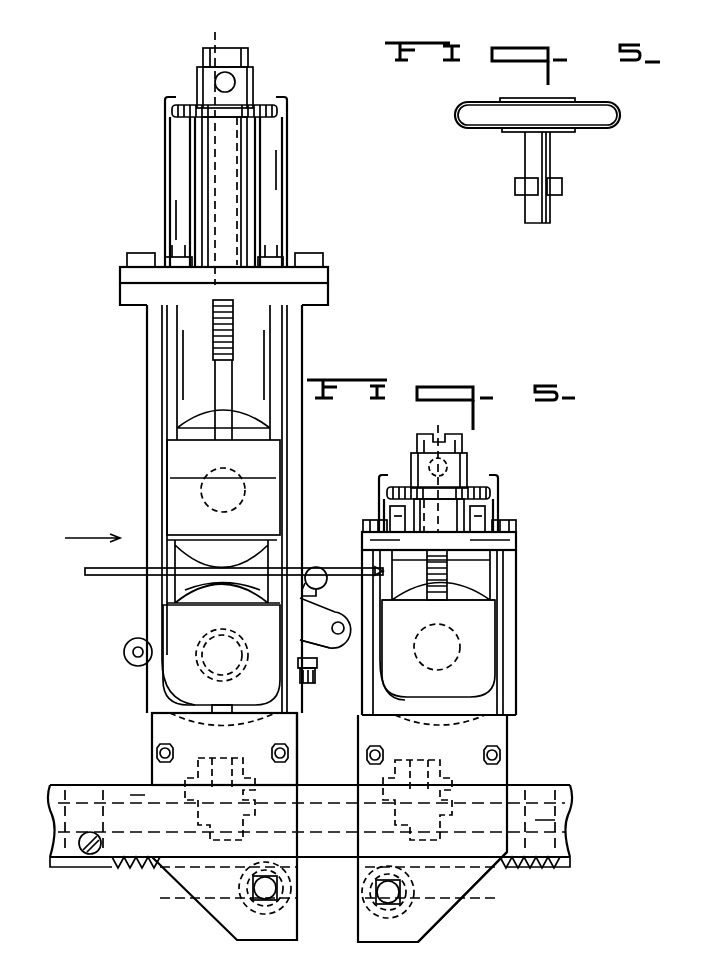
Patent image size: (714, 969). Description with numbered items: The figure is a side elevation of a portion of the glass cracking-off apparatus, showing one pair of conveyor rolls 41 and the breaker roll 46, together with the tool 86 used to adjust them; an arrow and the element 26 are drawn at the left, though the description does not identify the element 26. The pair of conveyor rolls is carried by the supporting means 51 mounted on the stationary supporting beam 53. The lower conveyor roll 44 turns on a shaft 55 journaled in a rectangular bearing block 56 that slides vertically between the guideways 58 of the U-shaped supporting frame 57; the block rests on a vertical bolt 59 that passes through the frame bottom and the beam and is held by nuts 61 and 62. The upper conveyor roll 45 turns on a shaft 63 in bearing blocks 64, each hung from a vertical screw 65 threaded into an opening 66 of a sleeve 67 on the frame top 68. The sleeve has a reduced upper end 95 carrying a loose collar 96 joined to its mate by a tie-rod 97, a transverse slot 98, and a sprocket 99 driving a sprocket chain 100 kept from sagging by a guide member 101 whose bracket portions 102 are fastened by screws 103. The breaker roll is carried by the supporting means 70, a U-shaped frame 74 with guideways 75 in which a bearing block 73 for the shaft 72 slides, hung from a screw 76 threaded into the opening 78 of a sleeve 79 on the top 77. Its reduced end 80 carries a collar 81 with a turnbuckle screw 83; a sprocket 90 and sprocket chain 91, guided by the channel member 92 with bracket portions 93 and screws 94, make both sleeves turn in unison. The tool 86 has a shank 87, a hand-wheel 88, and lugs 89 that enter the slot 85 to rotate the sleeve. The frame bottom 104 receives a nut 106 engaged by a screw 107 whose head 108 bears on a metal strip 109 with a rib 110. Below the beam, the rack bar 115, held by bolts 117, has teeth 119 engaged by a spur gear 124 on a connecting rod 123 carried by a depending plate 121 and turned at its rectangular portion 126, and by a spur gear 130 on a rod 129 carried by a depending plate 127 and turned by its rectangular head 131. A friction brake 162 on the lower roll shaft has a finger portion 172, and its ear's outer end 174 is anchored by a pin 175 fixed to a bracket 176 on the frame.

In FIG. 5, the rod 26 is at (100, 568).
In FIG. 5, the pair of conveyor rolls 41 is at (300, 527).
In FIG. 5, the lower conveyor roll 44 is at (222, 595).
In FIG. 5, the upper conveyor roll 45 is at (245, 420).
In FIG. 5, the breaker roll 46 is at (475, 595).
In FIG. 5, the supporting means 51 is at (304, 335).
In FIG. 5, the supporting beam 53 is at (68, 785).
In FIG. 5, the shaft 55 is at (195, 660).
In FIG. 5, the bearing block 56 is at (162, 688).
In FIG. 5, the supporting frame 57 is at (150, 453).
In FIG. 5, the vertical guideways 58 is at (178, 357).
In FIG. 5, the vertical bolt 59 is at (248, 722).
In FIG. 5, the nut 61 is at (222, 750).
In FIG. 5, the nut 62 is at (205, 830).
In FIG. 5, the shaft 63 is at (240, 478).
In FIG. 5, the bearing block 64 is at (175, 498).
In FIG. 5, the vertical screw 65 is at (234, 318).
In FIG. 5, the opening 66 is at (237, 210).
In FIG. 5, the vertical sleeve 67 is at (205, 158).
In FIG. 5, the top 68 is at (285, 275).
In FIG. 5, the supporting means 70 is at (530, 619).
In FIG. 5, the shaft 72 is at (425, 630).
In FIG. 5, the bearing block 73 is at (480, 680).
In FIG. 5, the supporting frame 74 is at (512, 565).
In FIG. 5, the vertical guideways 75 is at (362, 568).
In FIG. 5, the vertical screw 76 is at (447, 566).
In FIG. 5, the top 77 is at (518, 542).
In FIG. 5, the opening 78 is at (439, 515).
In FIG. 5, the vertical sleeve 79 is at (390, 515).
In FIG. 5, the reduced upper end 80 is at (462, 445).
In FIG. 5, the collar 81 is at (411, 462).
In FIG. 5, the screw 83 is at (448, 465).
In FIG. 5, the transverse slot 85 is at (444, 428).
In FIG. 6, the tool 86 is at (561, 168).
In FIG. 6, the shank 87 is at (535, 157).
In FIG. 6, the hand-wheel 88 is at (592, 112).
In FIG. 6, the lugs 89 is at (548, 203).
In FIG. 5, the sprocket 90 is at (475, 487).
In FIG. 5, the sprocket chain 91 is at (499, 490).
In FIG. 5, the guide member 92 is at (378, 476).
In FIG. 5, the bracket portions 93 is at (363, 525).
In FIG. 5, the screws 94 is at (486, 516).
In FIG. 5, the reduced upper end 95 is at (247, 52).
In FIG. 5, the collar 96 is at (253, 76).
In FIG. 5, the tie-rod 97 is at (215, 80).
In FIG. 5, the transverse slot 98 is at (215, 45).
In FIG. 5, the sprocket 99 is at (190, 105).
In FIG. 5, the sprocket chain 100 is at (163, 103).
In FIG. 5, the guide member 101 is at (289, 105).
In FIG. 5, the bracket portions 102 is at (172, 190).
In FIG. 5, the screws 103 is at (175, 257).
In FIG. 5, the bottom 104 is at (500, 770).
In FIG. 5, the nut 106 is at (392, 753).
In FIG. 5, the screw 107 is at (484, 754).
In FIG. 5, the head 108 is at (440, 838).
In FIG. 5, the metal strip 109 is at (475, 825).
In FIG. 5, the rib 110 is at (507, 787).
In FIG. 5, the rack bar 115 is at (65, 867).
In FIG. 5, the bolt 117 is at (79, 843).
In FIG. 5, the teeth 119 is at (140, 868).
In FIG. 5, the depending plate 121 is at (462, 890).
In FIG. 5, the connecting rod 123 is at (385, 912).
In FIG. 5, the spur gear 124 is at (370, 915).
In FIG. 5, the rectangular portion 126 is at (376, 888).
In FIG. 5, the depending plate 127 is at (185, 880).
In FIG. 5, the rod 129 is at (240, 905).
In FIG. 5, the spur gear 130 is at (285, 902).
In FIG. 5, the rectangular head 131 is at (255, 882).
In FIG. 5, the friction brake 162 is at (172, 586).
In FIG. 5, the finger portion 172 is at (315, 567).
In FIG. 5, the outer end 174 is at (340, 613).
In FIG. 5, the pin 175 is at (330, 648).
In FIG. 5, the bracket 176 is at (318, 668).